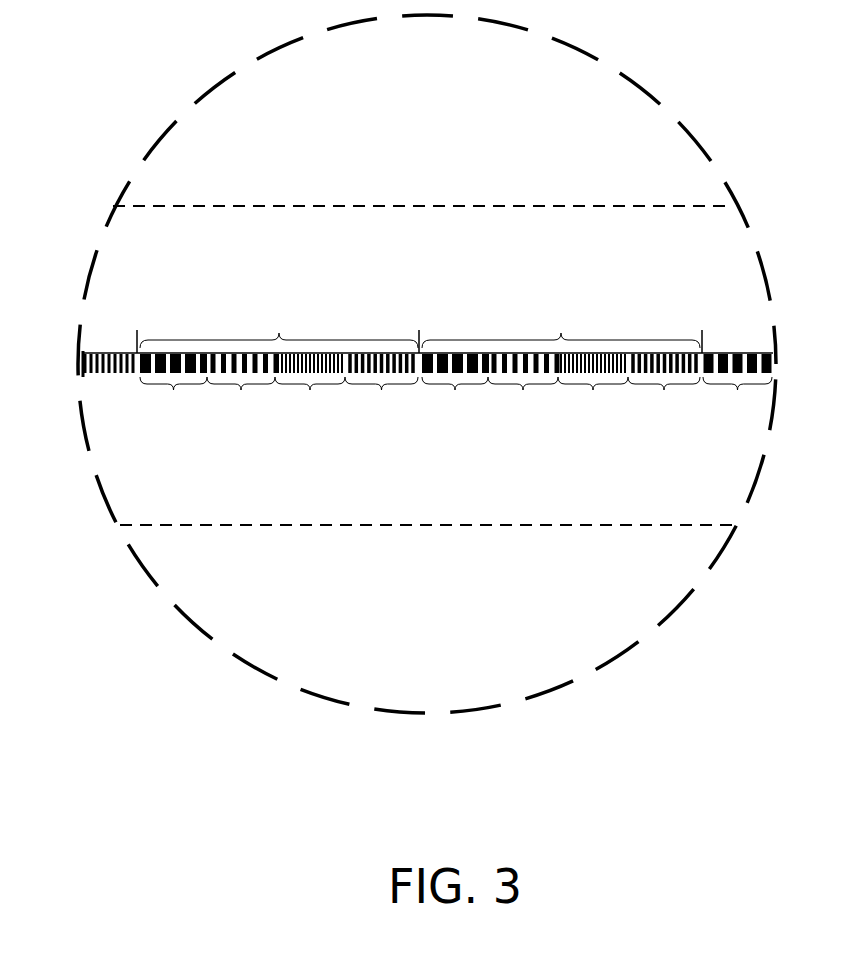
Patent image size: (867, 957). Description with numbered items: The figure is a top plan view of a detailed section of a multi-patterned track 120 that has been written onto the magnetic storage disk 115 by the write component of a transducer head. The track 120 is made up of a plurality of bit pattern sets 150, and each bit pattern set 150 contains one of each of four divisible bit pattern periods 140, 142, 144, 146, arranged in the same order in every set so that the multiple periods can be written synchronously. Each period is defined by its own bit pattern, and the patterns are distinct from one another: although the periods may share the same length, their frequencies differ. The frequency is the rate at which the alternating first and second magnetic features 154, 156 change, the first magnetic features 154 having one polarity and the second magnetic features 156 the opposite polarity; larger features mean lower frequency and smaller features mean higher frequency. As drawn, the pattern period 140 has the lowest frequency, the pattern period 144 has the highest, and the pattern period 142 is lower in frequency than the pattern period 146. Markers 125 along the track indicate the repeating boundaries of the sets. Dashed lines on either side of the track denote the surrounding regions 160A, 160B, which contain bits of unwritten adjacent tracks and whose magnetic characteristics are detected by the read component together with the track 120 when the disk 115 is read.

The disk 115 is at (205, 152).
The multi-patterned track 120 is at (112, 382).
The boundary / period marker 125 is at (137, 332).
The bit pattern period 140 is at (456, 385).
The bit pattern period 142 is at (382, 385).
The bit pattern period 144 is at (451, 385).
The bit pattern period 146 is at (522, 385).
The bit pattern set 150 is at (420, 330).
The first magnetic feature 154 is at (196, 353).
The second magnetic feature 156 is at (185, 353).
The surrounding region 160A is at (333, 242).
The surrounding region 160B is at (337, 475).